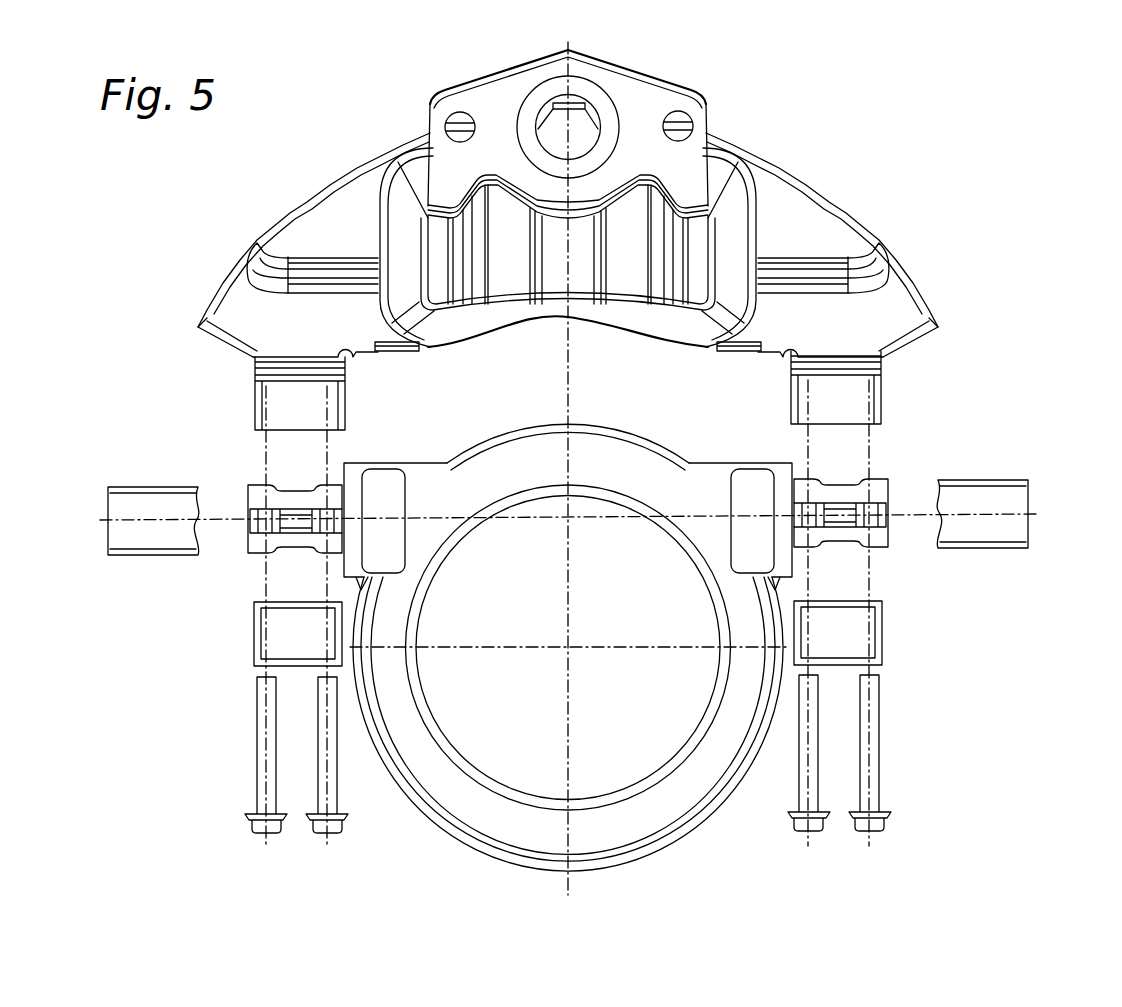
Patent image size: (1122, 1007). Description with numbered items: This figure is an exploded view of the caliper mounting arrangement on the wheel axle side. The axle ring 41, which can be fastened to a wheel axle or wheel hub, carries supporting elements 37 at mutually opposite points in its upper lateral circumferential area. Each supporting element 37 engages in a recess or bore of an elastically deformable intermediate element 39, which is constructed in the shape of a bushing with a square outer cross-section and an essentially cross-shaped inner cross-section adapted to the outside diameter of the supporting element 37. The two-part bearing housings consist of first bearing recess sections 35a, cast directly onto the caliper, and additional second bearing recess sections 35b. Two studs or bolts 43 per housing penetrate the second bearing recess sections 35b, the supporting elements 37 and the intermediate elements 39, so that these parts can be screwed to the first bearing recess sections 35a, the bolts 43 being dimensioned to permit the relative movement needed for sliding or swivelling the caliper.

The first bearing recess section 35a is at (874, 393).
The second bearing recess section 35b is at (856, 630).
The supporting element 37 is at (876, 492).
The elastically deformable intermediate element 39 is at (1012, 492).
The axle ring 41 is at (683, 813).
The bolt 43 is at (812, 777).